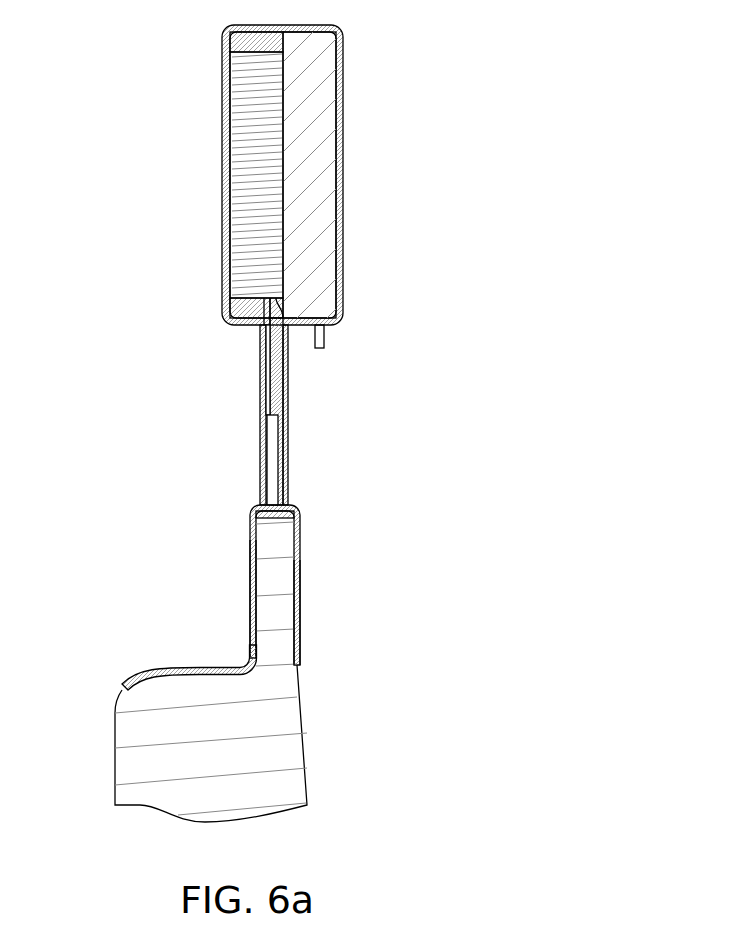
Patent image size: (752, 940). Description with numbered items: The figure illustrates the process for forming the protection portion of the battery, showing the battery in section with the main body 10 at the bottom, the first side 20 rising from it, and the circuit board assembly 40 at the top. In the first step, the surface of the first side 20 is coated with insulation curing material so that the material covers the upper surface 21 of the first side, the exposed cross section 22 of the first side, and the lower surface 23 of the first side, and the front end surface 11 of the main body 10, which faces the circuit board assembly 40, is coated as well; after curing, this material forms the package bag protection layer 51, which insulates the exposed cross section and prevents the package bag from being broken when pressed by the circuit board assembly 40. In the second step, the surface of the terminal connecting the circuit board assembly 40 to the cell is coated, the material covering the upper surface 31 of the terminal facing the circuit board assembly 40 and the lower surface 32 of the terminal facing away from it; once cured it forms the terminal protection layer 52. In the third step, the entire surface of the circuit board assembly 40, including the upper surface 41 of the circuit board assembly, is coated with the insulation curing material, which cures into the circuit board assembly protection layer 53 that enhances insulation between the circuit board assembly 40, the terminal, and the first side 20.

The main body 10 is at (276, 778).
The front end surface 11 is at (157, 683).
The first side 20 is at (275, 588).
The upper surface of the first side 21 is at (260, 582).
The cross section of the first side 22 is at (290, 507).
The lower surface of the first side 23 is at (292, 633).
The upper surface of the terminal 31 is at (253, 465).
The lower surface of the terminal 32 is at (287, 425).
The circuit board assembly 40 is at (268, 222).
The upper surface of the circuit board assembly 41 is at (227, 93).
The package bag protection layer 51 is at (207, 647).
The terminal protection layer 52 is at (235, 393).
The circuit board assembly protection layer 53 is at (355, 95).